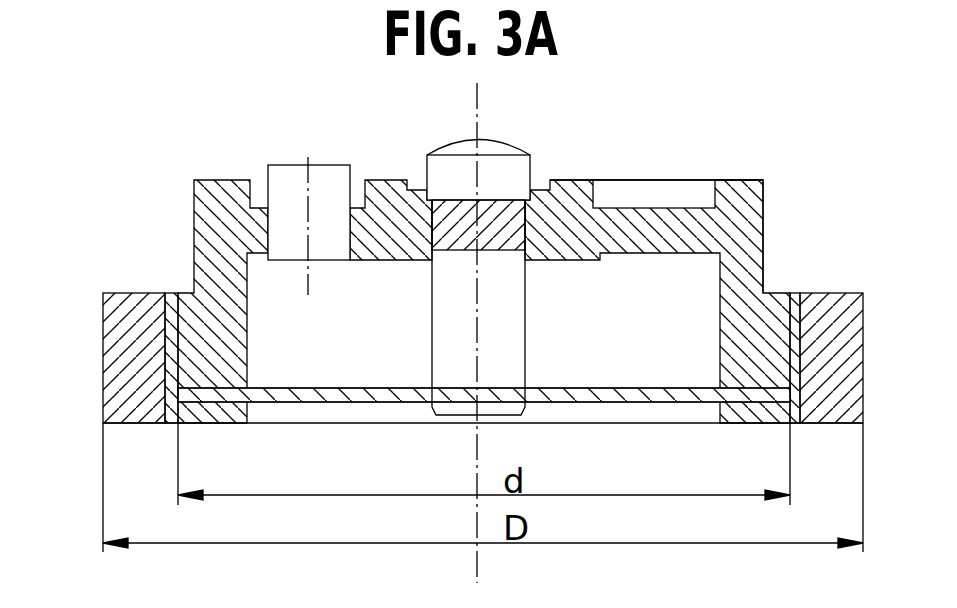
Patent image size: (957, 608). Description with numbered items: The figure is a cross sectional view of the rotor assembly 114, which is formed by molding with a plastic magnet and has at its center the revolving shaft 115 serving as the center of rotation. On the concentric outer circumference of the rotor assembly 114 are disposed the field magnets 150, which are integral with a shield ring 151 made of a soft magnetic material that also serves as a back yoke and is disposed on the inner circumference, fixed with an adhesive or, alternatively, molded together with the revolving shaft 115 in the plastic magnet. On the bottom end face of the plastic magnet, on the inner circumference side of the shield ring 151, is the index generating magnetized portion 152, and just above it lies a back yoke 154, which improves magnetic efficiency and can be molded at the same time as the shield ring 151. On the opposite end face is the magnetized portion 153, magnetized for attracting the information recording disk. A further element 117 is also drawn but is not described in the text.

The rotor assembly 114 is at (594, 182).
The revolving shaft 115 is at (493, 162).
The sensor block 117 is at (277, 174).
The field magnets 150 is at (120, 425).
The shield ring 151 is at (171, 424).
The index generating magnetized portion 152 is at (748, 424).
The magnetized portion 153 is at (750, 181).
The back yoke 154 is at (640, 404).